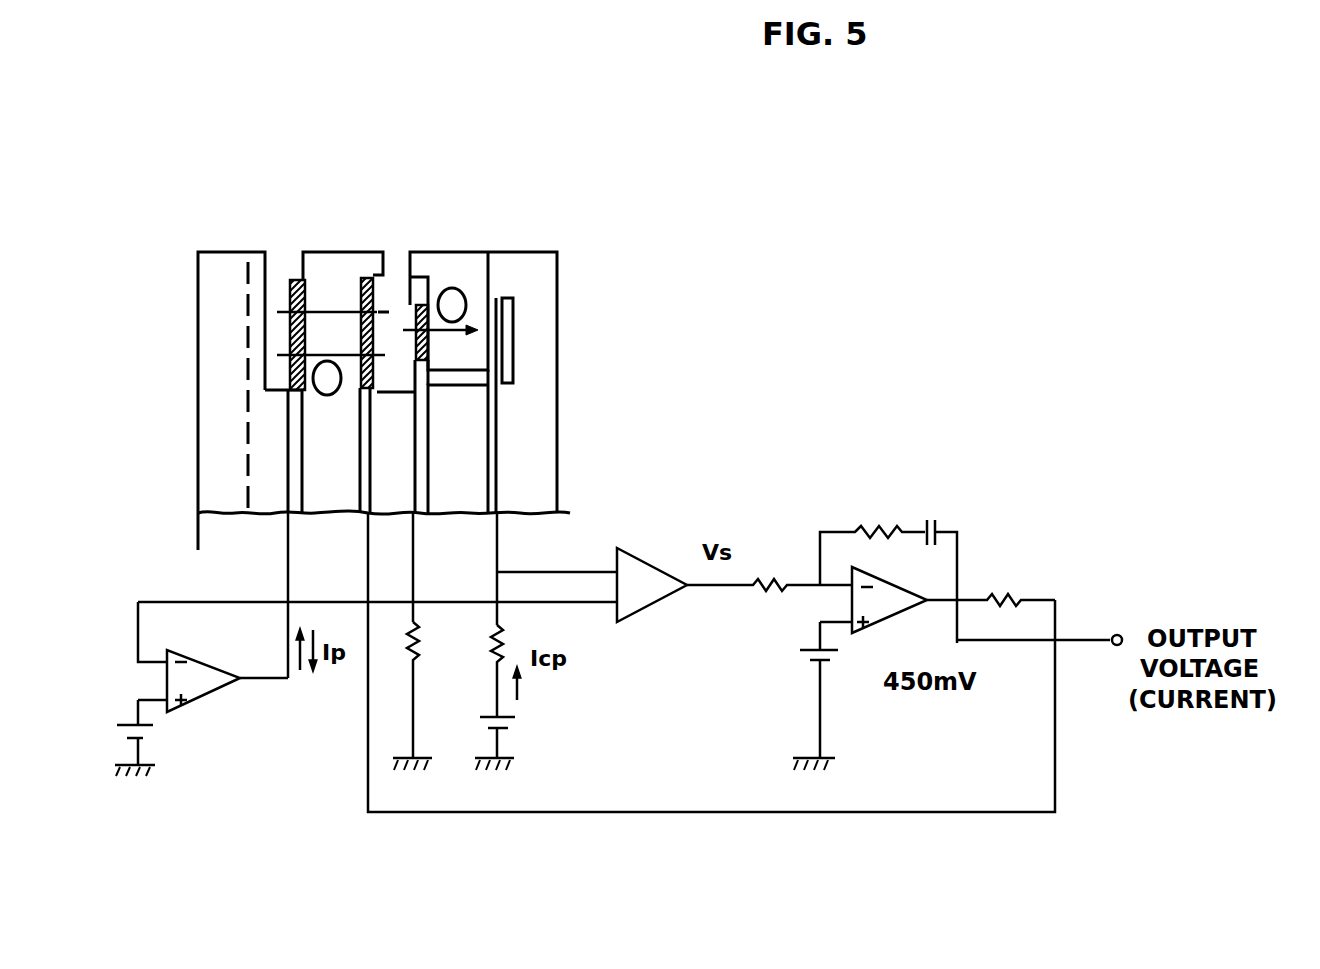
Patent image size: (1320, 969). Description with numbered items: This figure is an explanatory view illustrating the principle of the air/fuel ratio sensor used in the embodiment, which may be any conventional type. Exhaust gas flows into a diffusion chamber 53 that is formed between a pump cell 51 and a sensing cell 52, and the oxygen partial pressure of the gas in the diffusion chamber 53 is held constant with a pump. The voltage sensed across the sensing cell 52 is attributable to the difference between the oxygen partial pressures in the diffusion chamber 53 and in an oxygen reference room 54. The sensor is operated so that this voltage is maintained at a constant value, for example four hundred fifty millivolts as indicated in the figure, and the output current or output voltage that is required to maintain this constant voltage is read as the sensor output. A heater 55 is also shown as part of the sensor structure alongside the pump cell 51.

The Ip cell 51 is at (325, 265).
The Vs/Icp cell 52 is at (458, 263).
The diffusion chamber 53 is at (393, 283).
The oxygen reference room 54 is at (513, 322).
The heater 55 is at (247, 297).